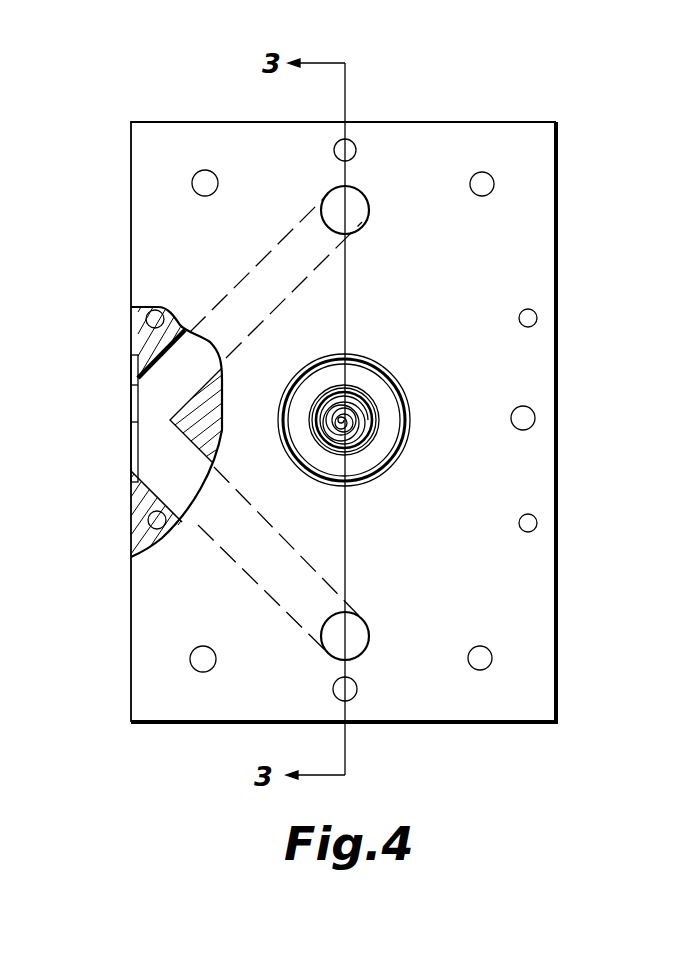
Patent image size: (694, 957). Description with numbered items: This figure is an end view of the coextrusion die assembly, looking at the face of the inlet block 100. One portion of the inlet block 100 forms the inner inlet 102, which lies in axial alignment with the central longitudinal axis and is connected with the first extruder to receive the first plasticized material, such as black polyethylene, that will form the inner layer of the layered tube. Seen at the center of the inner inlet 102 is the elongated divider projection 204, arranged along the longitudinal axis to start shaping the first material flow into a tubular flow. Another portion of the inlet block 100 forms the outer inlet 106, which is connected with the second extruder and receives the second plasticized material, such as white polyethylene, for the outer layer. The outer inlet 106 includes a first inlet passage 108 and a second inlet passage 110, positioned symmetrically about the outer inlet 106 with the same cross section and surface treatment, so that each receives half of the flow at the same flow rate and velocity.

The inlet block 100 is at (494, 112).
The inner inlet 102 is at (375, 408).
The divider projection 204 is at (356, 432).
The outer inlet 106 is at (116, 444).
The first inlet passage 108 is at (250, 276).
The second inlet passage 110 is at (283, 551).